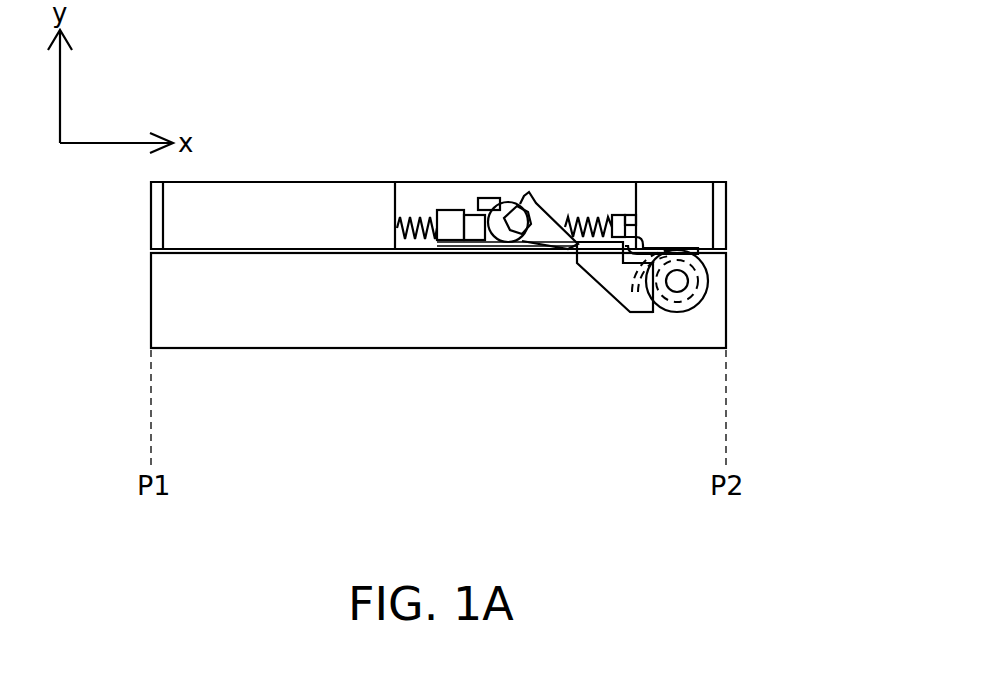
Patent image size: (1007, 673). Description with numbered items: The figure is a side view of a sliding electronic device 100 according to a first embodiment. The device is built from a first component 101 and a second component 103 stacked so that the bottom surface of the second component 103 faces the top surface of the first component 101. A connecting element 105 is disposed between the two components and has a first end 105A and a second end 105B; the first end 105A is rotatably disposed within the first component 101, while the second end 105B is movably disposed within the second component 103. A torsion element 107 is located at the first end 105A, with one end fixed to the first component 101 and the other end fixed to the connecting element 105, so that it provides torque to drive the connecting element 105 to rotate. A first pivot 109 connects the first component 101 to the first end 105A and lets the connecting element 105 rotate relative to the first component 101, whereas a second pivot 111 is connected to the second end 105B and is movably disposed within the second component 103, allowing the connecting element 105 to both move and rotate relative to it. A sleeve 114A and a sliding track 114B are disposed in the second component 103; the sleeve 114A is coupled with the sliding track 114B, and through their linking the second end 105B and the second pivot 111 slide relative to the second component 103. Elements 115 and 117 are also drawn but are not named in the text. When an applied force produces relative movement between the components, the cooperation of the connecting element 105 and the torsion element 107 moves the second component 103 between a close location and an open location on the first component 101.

The sliding electronic device 100 is at (742, 115).
The first component 101 is at (437, 350).
The second component 103 is at (280, 182).
The connecting element 105 is at (577, 264).
The first end 105A is at (673, 313).
The second end 105B is at (507, 250).
The torsion element 107 is at (705, 297).
The first pivot 109 is at (688, 280).
The second pivot 111 is at (503, 204).
The sleeve 114A is at (452, 210).
The sliding track 114B is at (612, 215).
The second block 115 is at (563, 215).
The first block 117 is at (418, 215).